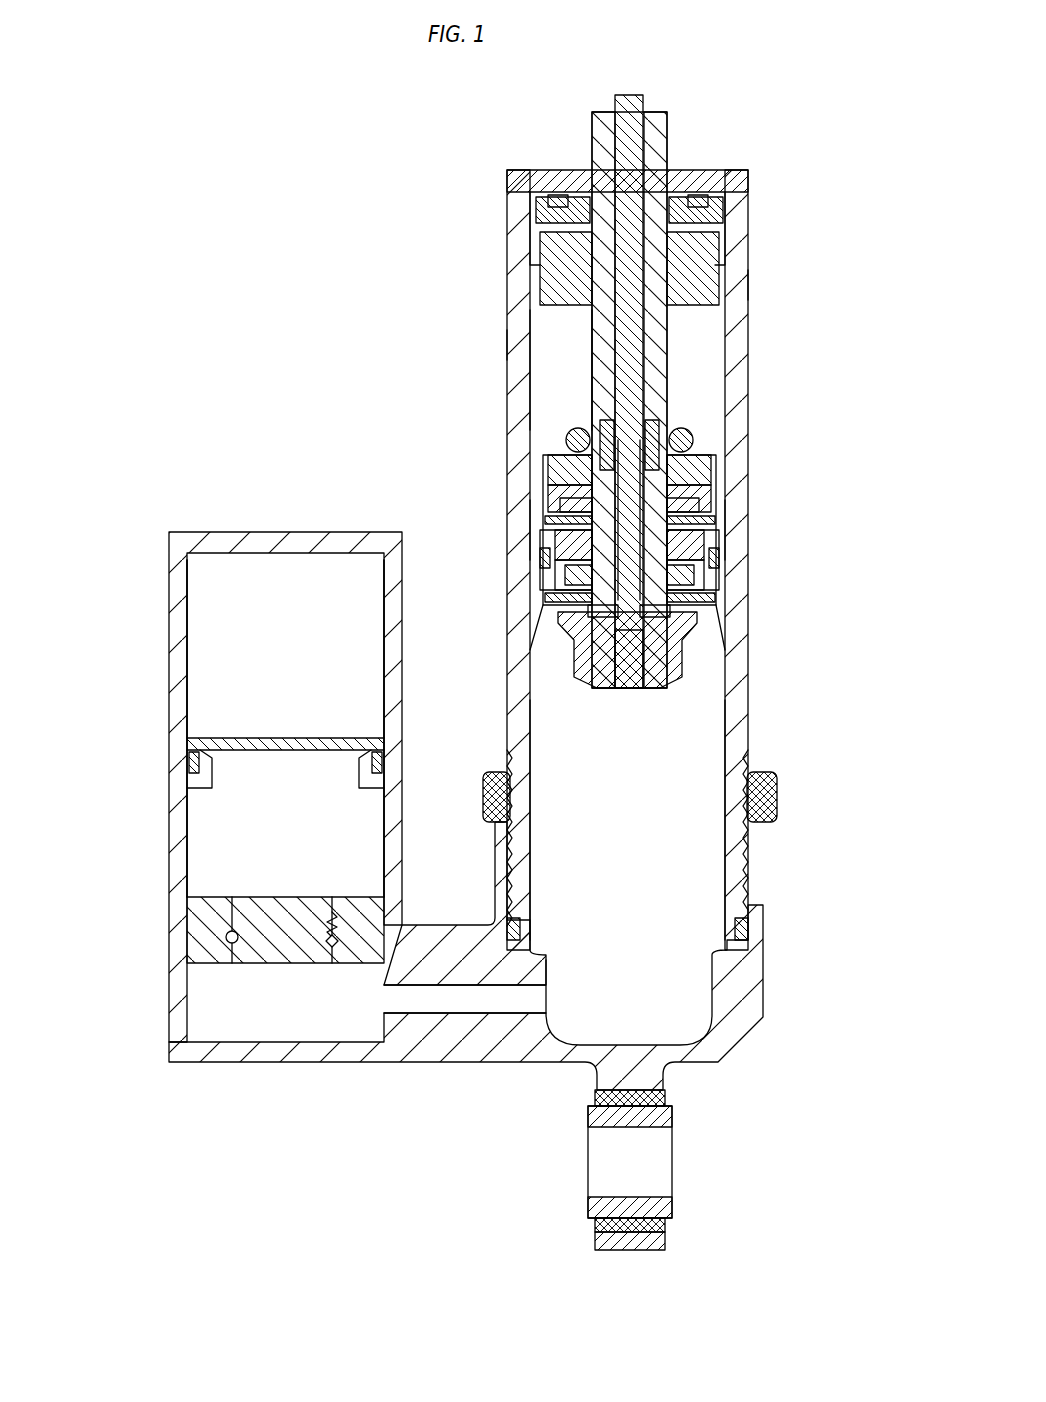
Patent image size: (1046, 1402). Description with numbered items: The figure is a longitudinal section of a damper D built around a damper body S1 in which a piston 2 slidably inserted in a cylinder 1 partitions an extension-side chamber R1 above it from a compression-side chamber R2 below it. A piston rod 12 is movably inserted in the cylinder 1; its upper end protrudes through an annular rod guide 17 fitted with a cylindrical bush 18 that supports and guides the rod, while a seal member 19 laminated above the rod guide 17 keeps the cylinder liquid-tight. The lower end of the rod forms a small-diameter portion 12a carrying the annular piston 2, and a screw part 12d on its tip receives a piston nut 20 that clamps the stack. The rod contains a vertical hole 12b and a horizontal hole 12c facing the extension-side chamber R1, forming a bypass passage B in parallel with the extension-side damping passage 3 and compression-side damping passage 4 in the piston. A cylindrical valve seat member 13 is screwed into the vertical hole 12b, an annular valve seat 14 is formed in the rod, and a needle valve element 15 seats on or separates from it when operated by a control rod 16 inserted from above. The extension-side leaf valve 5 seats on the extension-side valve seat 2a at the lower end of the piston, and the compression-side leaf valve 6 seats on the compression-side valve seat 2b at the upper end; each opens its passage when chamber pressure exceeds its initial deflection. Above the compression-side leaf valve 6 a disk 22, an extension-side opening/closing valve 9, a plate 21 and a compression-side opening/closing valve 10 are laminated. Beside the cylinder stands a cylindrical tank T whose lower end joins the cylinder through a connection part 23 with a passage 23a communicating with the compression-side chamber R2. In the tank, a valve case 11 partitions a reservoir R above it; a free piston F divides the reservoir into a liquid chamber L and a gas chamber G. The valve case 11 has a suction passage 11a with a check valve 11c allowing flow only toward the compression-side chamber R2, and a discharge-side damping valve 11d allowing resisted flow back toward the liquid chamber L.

The cylinder 1 is at (748, 324).
The piston 2 is at (727, 530).
The extension-side valve seat 2a is at (580, 640).
The compression-side valve seat 2b is at (705, 523).
The extension-side damping passage 3 is at (585, 575).
The compression-side damping passage 4 is at (700, 580).
The extension-side leaf valve 5 is at (690, 600).
The compression-side leaf valve 6 is at (700, 495).
The extension-side opening/closing valve 9 is at (558, 495).
The compression-side opening/closing valve 10 is at (575, 520).
The valve case 11 is at (200, 945).
The suction passage 11a is at (232, 963).
The check valve 11c is at (225, 928).
The discharge-side damping valve 11d is at (320, 963).
The piston rod 12 is at (672, 150).
The small-diameter portion 12a is at (715, 560).
The vertical hole 12b is at (640, 430).
The horizontal hole 12c is at (575, 437).
The screw part 12d is at (690, 655).
The valve seat member 13 is at (640, 690).
The annular valve seat 14 is at (595, 578).
The needle valve element 15 is at (560, 560).
The control rod 16 is at (622, 130).
The rod guide 17 is at (535, 260).
The bush 18 is at (722, 242).
The seal member 19 is at (540, 210).
The piston nut 20 is at (758, 776).
The plate 21 is at (705, 475).
The disk 22 is at (692, 440).
The connection part 23 is at (493, 1050).
The passage 23a is at (433, 1002).
The bypass passage B is at (660, 614).
The damper D is at (365, 325).
The free piston F is at (372, 772).
The gas chamber G is at (215, 690).
The liquid chamber L is at (215, 800).
The reservoir R is at (100, 700).
The extension-side chamber R1 is at (560, 362).
The compression-side chamber R2 is at (700, 872).
The damper body S1 is at (752, 280).
The tank T is at (169, 606).